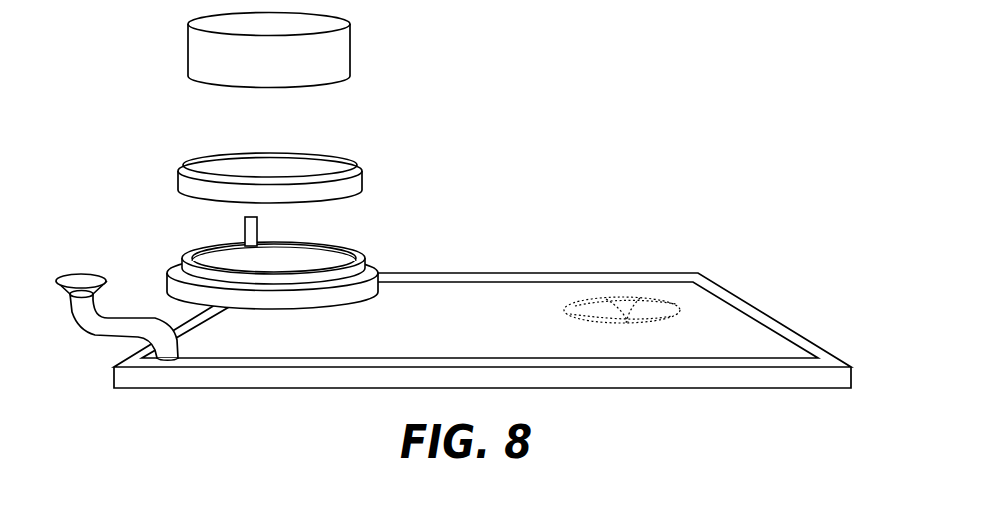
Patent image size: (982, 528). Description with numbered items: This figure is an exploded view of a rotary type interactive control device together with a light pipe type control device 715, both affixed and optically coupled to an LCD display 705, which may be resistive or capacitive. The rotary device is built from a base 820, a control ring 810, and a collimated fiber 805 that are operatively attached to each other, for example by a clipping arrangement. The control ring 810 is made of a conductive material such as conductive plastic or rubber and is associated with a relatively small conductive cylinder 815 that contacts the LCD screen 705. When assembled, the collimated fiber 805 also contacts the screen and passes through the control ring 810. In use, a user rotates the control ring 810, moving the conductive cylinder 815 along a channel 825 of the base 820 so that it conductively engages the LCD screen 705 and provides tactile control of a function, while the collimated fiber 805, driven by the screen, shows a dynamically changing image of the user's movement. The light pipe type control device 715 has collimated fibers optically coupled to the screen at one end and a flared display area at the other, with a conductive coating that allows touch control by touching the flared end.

The LCD display 705 is at (516, 272).
The light pipe type control device 715 is at (94, 338).
The collimated fiber 805 is at (350, 52).
The control ring 810 is at (362, 180).
The conductive cylinder 815 is at (259, 229).
The base 820 is at (375, 265).
The channel 825 is at (189, 257).